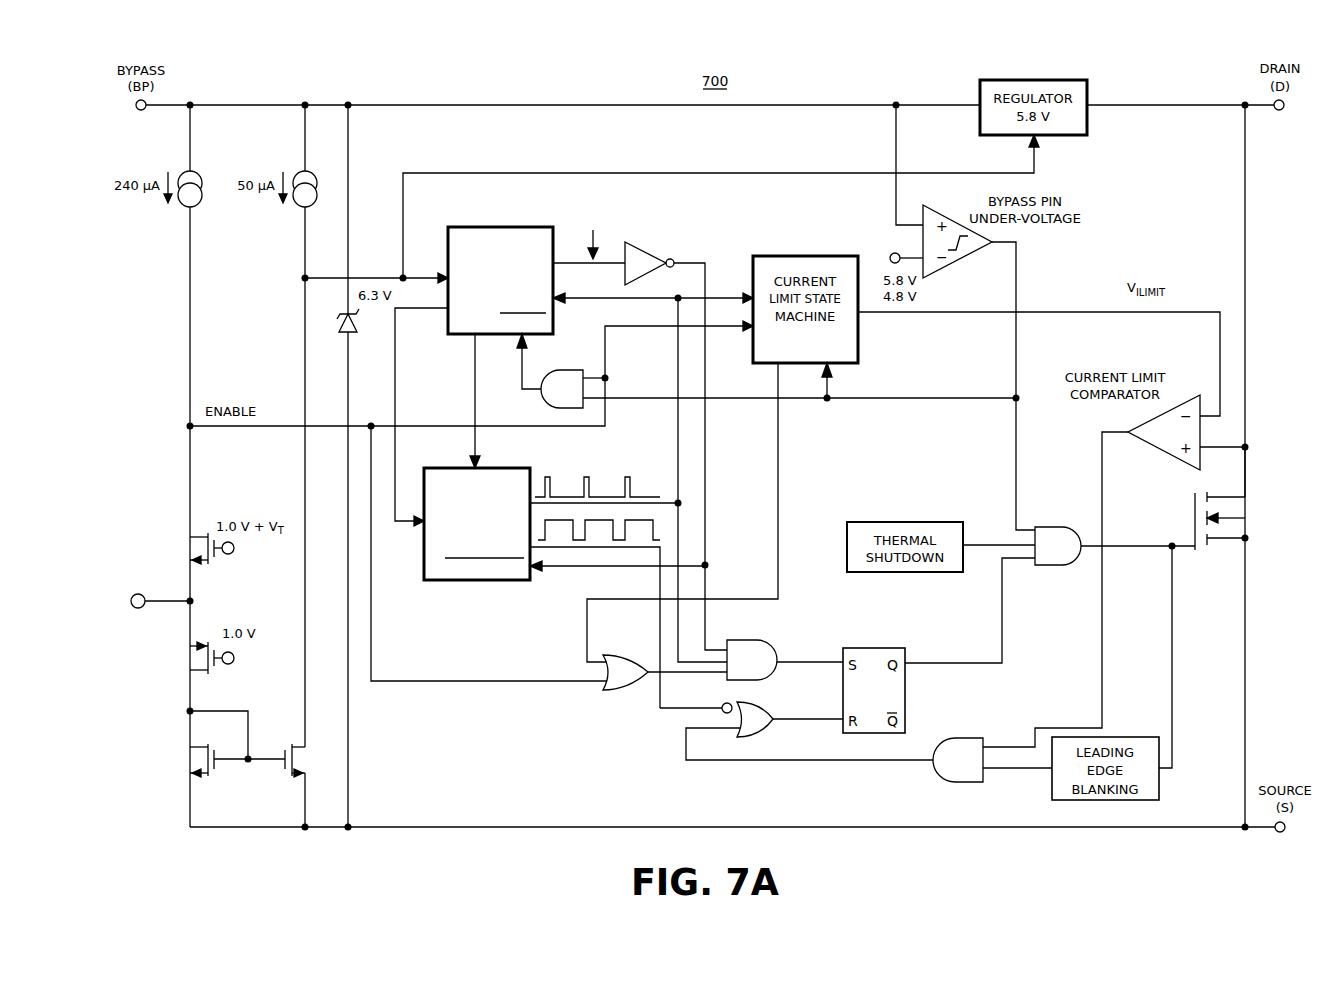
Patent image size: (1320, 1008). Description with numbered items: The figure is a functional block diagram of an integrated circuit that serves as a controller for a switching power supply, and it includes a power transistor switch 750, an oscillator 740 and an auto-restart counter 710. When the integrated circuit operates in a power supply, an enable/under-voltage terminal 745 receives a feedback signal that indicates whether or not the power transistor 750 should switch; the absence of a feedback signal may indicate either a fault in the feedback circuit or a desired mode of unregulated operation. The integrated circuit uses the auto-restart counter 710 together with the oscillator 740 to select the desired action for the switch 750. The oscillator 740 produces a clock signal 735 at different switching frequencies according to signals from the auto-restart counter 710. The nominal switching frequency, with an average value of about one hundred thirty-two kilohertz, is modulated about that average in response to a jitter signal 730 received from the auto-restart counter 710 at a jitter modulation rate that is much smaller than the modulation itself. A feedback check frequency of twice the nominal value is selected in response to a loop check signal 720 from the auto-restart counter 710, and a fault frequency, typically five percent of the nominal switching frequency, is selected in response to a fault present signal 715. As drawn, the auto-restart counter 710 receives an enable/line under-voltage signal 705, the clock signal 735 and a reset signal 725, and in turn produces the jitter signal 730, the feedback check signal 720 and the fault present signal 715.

The enable/line under-voltage signal 705 is at (418, 168).
The auto-restart counter 710 is at (460, 223).
The fault present signal 715 is at (565, 266).
The loop check signal 720 is at (401, 333).
The reset signal 725 is at (528, 370).
The jitter signal 730 is at (466, 384).
The clock signal 735 is at (676, 493).
The oscillator 740 is at (418, 568).
The enable/under-voltage terminal 745 is at (142, 592).
The power transistor switch 750 is at (1251, 519).